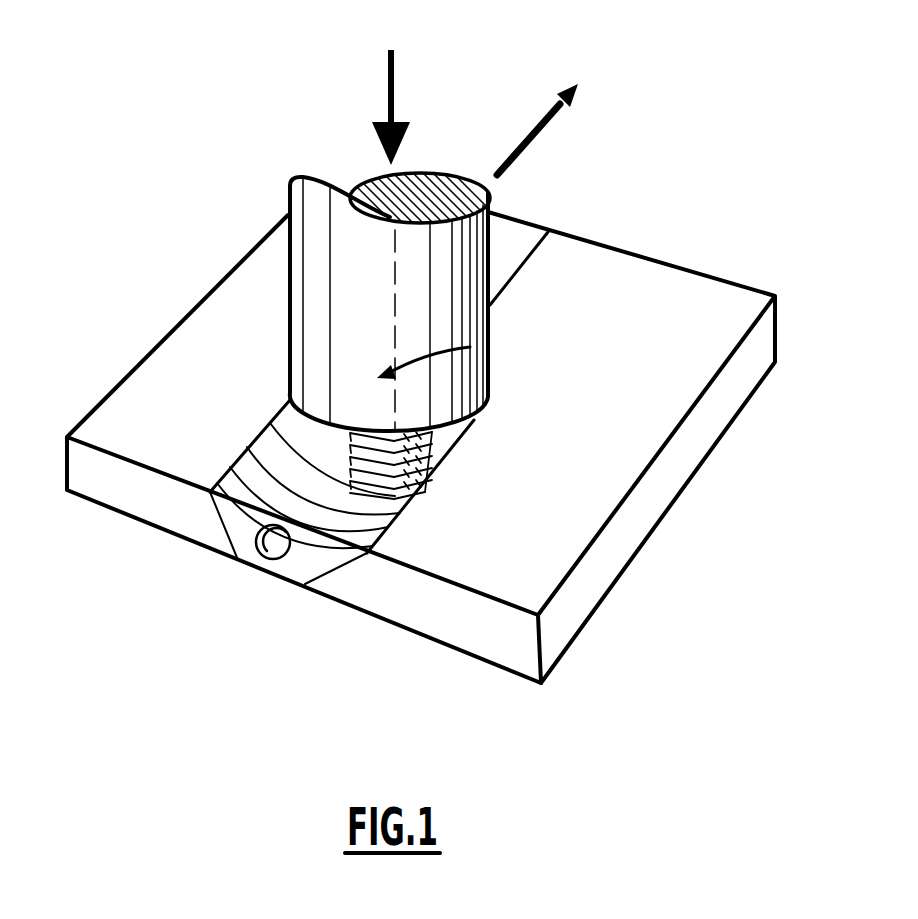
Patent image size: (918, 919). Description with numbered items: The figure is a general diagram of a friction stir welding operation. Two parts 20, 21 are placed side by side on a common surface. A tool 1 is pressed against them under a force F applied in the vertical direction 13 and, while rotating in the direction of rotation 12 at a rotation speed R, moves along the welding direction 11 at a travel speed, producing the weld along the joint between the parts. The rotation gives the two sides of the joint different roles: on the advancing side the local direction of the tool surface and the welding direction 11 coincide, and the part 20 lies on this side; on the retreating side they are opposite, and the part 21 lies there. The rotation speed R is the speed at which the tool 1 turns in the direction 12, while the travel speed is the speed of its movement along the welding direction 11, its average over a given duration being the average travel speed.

The tool 1 is at (430, 192).
The welding direction 11 is at (523, 157).
The direction of rotation 12 is at (427, 377).
The vertical direction 13 is at (387, 83).
The part 20 is at (198, 435).
The part 21 is at (577, 460).